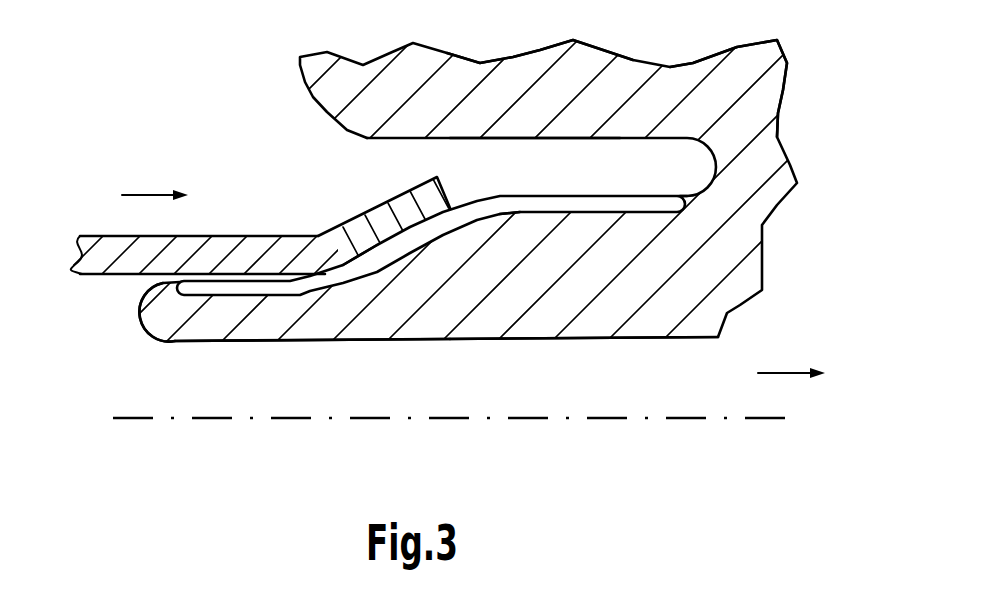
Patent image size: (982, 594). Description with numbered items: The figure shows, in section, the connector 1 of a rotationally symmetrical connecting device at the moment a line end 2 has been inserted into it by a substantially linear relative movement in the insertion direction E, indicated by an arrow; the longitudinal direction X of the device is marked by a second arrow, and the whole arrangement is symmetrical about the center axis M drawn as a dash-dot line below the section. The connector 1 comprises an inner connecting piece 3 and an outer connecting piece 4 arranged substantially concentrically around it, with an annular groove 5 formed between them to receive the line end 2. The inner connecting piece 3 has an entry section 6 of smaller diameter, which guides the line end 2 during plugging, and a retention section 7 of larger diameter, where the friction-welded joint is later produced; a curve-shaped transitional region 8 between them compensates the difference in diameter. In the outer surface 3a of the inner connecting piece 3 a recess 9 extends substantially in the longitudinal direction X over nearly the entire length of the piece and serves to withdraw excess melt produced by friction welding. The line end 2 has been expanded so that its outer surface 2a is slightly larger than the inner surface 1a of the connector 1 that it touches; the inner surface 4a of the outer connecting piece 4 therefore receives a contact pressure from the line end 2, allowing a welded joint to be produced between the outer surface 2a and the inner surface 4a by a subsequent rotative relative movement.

The connector 1 is at (308, 84).
The inner surface of the connector 1a is at (387, 140).
The inner surface of the outer connecting piece 4a is at (537, 140).
The outer connecting piece 4 is at (561, 80).
The annular groove 5 is at (587, 157).
The outer surface of the inner connecting piece 3a is at (625, 196).
The line end 2 is at (83, 235).
The outer surface of the line end 2a is at (270, 235).
The inner connecting piece 3 is at (175, 341).
The entry section 6 is at (248, 300).
The retention section 7 is at (592, 290).
The transitional region 8 is at (368, 262).
The recess 9 is at (510, 210).
The insertion direction E is at (155, 182).
The longitudinal direction X is at (791, 360).
The center axis M is at (135, 419).